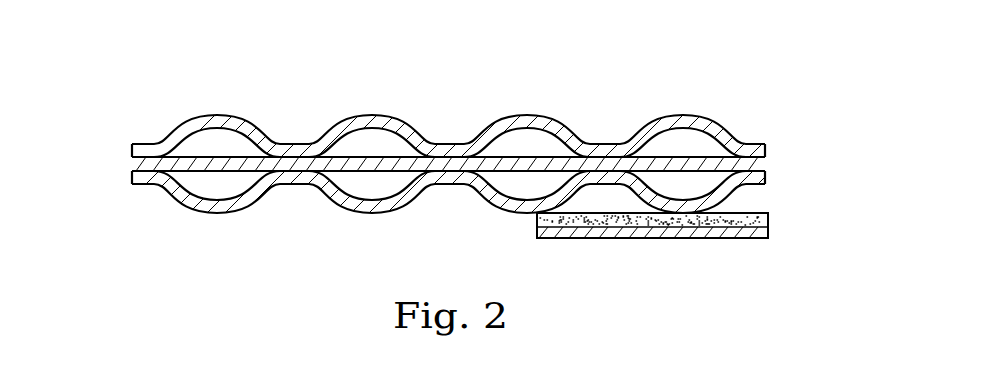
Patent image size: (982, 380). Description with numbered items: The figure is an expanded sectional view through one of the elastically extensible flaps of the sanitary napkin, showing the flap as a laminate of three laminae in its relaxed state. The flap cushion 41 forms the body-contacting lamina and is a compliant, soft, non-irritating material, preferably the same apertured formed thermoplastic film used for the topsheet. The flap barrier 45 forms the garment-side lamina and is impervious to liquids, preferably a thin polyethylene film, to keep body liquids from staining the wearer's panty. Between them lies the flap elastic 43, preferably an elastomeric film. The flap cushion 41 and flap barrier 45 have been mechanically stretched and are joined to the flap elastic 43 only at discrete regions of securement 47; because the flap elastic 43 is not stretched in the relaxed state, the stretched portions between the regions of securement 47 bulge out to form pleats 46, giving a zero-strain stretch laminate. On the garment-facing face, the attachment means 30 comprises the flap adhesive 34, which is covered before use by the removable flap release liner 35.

The attachment means 30 is at (693, 230).
The flap adhesive 34 is at (768, 220).
The flap release liner 35 is at (732, 233).
The flap cushion 41 is at (448, 109).
The flap elastic 43 is at (162, 163).
The flap barrier 45 is at (190, 205).
The pleats 46 is at (688, 113).
The regions of securement 47 is at (450, 150).